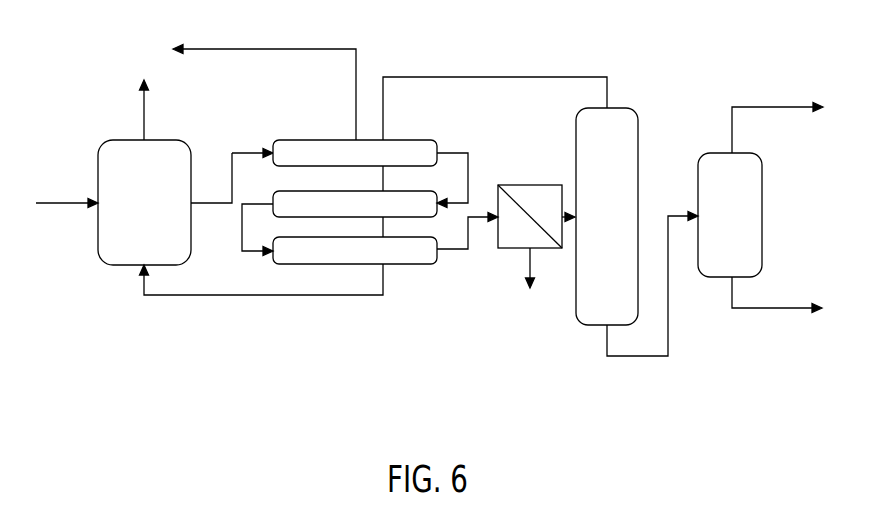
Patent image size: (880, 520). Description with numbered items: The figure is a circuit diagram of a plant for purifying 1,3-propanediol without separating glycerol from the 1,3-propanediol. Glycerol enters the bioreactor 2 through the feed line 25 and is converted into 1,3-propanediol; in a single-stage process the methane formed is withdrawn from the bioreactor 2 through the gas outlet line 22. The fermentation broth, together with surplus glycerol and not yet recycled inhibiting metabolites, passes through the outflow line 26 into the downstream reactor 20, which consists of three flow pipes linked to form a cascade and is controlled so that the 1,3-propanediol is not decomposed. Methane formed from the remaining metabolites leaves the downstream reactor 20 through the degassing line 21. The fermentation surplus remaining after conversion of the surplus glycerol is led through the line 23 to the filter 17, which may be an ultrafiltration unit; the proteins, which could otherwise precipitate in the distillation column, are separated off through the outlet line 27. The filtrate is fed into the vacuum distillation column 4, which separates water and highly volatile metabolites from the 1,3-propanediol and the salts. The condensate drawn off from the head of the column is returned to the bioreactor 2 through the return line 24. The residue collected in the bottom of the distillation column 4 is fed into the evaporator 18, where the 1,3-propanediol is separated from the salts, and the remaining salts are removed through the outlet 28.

The bioreactor 2 is at (117, 266).
The vacuum distillation column 4 is at (613, 108).
The filter 17 is at (510, 185).
The evaporator 18 is at (762, 215).
The downstream reactor 20 is at (407, 265).
The degassing line 21 is at (212, 50).
The gas outlet line 22 is at (143, 110).
The line 23 is at (457, 249).
The return line 24 is at (448, 77).
The feed line 25 is at (77, 203).
The outflow line 26 is at (242, 150).
The outlet line 27 is at (528, 288).
The outlet 28 is at (777, 309).